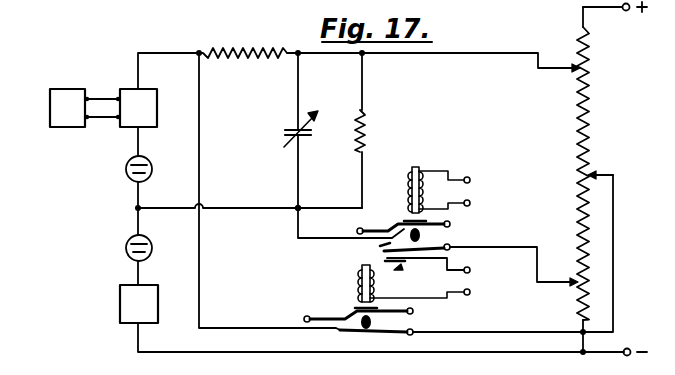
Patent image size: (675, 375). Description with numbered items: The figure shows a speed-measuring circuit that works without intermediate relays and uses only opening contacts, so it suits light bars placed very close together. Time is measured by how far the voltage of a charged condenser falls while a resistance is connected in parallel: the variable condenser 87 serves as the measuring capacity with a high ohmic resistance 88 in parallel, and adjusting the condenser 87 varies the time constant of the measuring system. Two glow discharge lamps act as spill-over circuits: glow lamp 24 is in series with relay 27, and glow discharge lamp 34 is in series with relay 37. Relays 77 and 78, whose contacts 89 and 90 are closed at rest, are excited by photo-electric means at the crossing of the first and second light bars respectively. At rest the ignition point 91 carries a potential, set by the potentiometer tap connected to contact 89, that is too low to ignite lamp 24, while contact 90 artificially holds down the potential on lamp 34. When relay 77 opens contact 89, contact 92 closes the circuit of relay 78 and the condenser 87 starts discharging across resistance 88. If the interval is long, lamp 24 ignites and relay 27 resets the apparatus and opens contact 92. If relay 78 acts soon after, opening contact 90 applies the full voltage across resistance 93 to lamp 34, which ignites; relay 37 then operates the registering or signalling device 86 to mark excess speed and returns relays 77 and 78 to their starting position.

The registering or signalling device 86 is at (85, 108).
The relay 37 is at (138, 108).
The glow discharge lamp 34 is at (125, 170).
The glow discharge lamp 24 is at (125, 248).
The relay 27 is at (139, 304).
The resistance 93 is at (252, 48).
The variable condenser 87 is at (286, 132).
The high ohmic resistance 88 is at (366, 138).
The ignition point 91 is at (296, 210).
The contact 89 is at (400, 239).
The contact 92 is at (405, 266).
The contact 90 is at (336, 330).
The relay 77 is at (455, 190).
The relay 78 is at (430, 283).